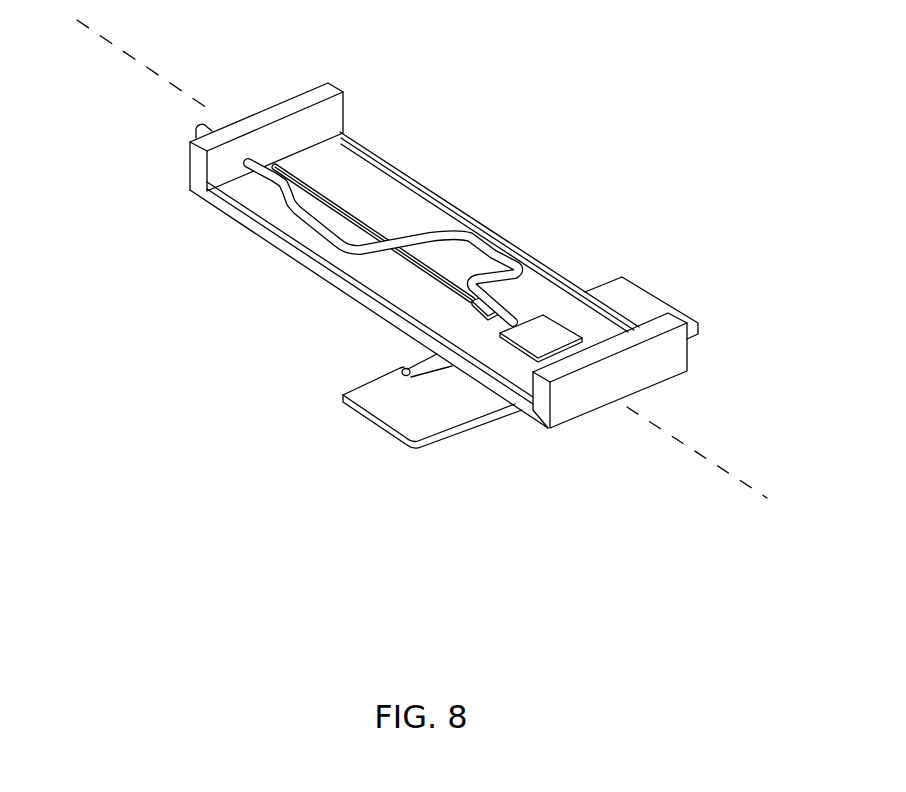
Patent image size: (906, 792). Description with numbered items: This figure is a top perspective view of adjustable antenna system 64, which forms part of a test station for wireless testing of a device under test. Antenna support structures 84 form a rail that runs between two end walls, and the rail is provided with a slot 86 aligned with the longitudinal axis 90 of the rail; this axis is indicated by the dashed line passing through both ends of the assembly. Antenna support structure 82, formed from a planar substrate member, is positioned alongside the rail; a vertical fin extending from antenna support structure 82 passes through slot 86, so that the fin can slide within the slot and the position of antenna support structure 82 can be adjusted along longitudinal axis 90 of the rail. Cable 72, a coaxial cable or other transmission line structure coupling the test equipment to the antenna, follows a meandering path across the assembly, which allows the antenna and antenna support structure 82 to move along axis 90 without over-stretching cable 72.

The adjustable antenna system 64 is at (444, 255).
The transmission line structures 72 is at (317, 233).
The antenna support structure 82 is at (388, 437).
The antenna support structures 84 is at (363, 300).
The slot 86 is at (355, 208).
The longitudinal axis 90 is at (135, 57).